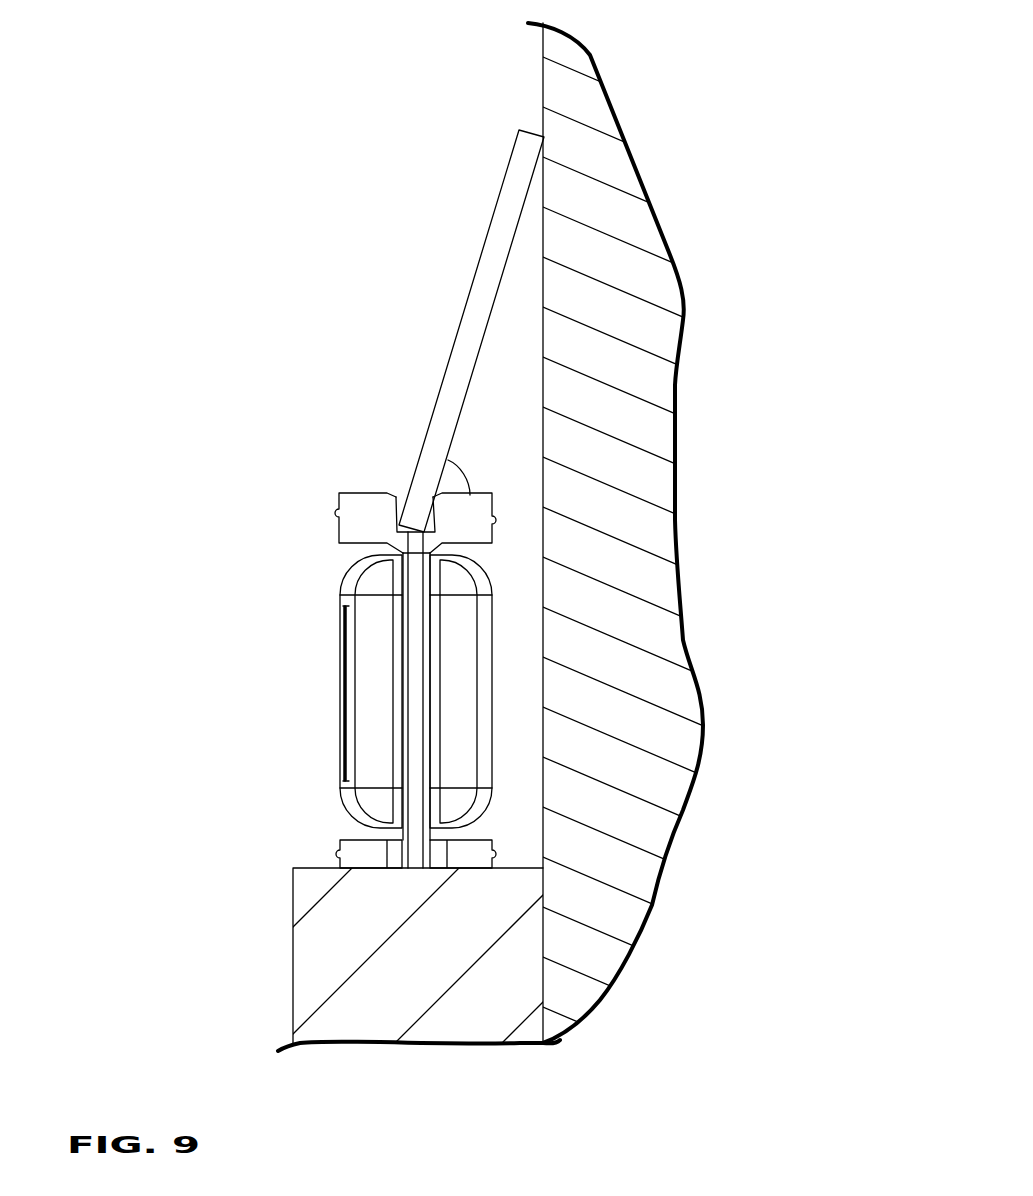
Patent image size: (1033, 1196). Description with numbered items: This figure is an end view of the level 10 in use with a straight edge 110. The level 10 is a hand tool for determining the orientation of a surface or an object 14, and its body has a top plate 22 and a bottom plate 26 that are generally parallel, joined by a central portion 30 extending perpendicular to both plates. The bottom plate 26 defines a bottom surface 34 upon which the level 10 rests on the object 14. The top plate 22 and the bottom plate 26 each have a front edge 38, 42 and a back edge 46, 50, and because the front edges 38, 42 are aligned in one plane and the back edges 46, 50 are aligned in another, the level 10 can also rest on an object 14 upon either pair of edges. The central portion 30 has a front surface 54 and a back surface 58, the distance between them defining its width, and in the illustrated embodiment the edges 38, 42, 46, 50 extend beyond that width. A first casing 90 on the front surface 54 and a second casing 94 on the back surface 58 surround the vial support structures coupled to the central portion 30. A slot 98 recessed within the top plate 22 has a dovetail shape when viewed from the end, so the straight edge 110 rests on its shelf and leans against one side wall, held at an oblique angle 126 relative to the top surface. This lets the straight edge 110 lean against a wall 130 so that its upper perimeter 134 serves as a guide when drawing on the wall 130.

The level 10 is at (245, 668).
The object 14 is at (400, 991).
The top plate 22 is at (357, 532).
The bottom plate 26 is at (367, 870).
The central portion 30 is at (362, 492).
The bottom surface 34 is at (467, 875).
The front edge 38 is at (338, 504).
The front edge 42 is at (338, 845).
The back edge 46 is at (496, 525).
The back edge 50 is at (492, 841).
The front surface 54 is at (400, 733).
The back surface 58 is at (432, 742).
The first casing 90 is at (370, 650).
The second casing 94 is at (460, 647).
The slot 98 is at (403, 522).
The straight edge 110 is at (478, 302).
The oblique angle 126 is at (448, 460).
The wall 130 is at (592, 329).
The upper perimeter 134 is at (529, 128).